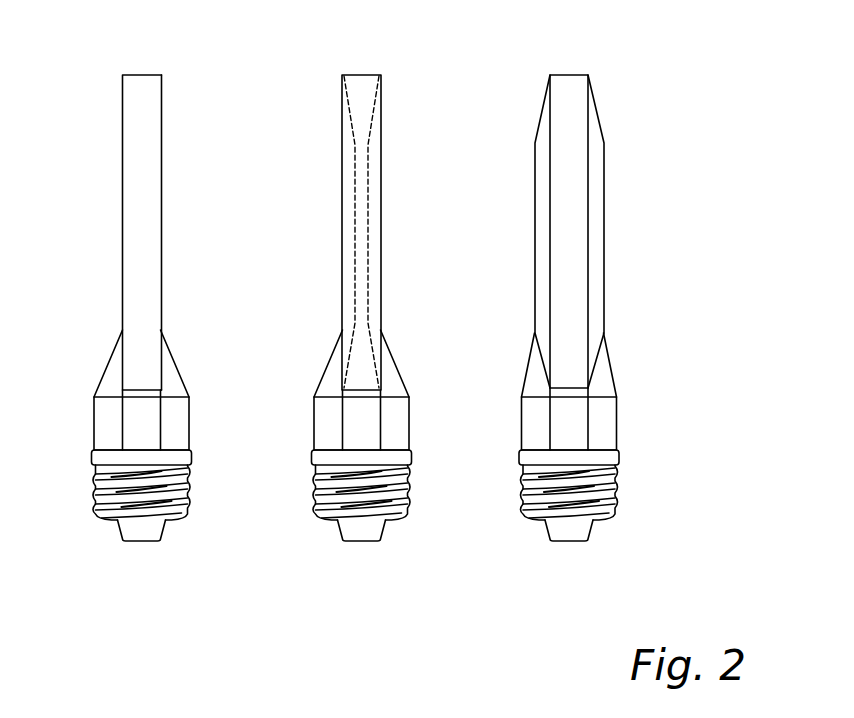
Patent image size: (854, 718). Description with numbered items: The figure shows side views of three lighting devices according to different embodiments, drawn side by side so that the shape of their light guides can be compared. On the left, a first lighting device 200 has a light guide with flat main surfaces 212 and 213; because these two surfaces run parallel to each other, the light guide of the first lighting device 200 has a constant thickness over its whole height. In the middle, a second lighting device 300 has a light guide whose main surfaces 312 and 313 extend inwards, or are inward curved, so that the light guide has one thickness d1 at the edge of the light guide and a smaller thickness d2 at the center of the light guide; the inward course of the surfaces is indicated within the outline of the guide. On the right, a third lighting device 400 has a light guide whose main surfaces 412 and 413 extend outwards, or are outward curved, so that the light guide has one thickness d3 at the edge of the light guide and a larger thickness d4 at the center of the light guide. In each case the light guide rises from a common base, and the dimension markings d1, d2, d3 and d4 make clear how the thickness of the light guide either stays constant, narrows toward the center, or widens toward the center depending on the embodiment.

The first lighting device 200 is at (142, 368).
The flat main surface 212 is at (142, 232).
The flat main surface 213 is at (162, 178).
The second lighting device 300 is at (352, 341).
The main surface 312 is at (355, 168).
The main surface 313 is at (370, 210).
The third lighting device 400 is at (568, 341).
The main surface 412 is at (568, 231).
The main surface 413 is at (604, 205).
The thickness at the edge d1 is at (381, 53).
The thickness at the center d2 is at (357, 242).
The thickness at the edge d3 is at (588, 53).
The thickness at the center d4 is at (604, 273).